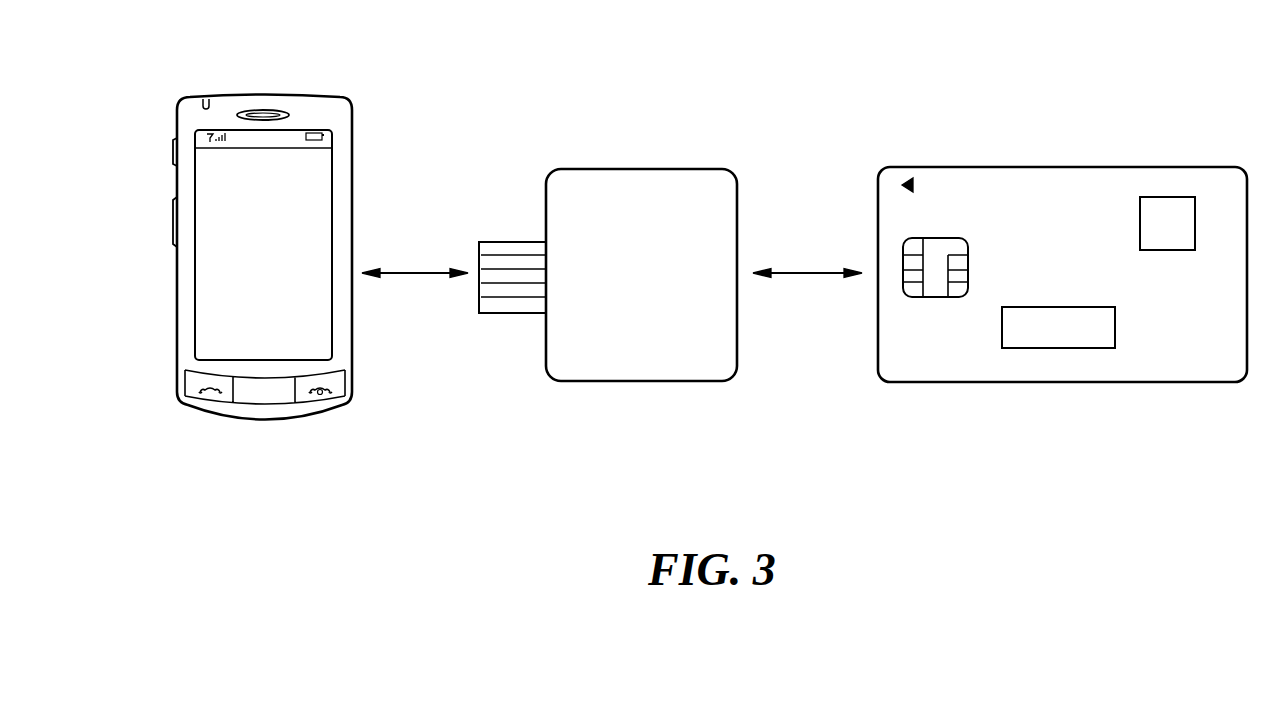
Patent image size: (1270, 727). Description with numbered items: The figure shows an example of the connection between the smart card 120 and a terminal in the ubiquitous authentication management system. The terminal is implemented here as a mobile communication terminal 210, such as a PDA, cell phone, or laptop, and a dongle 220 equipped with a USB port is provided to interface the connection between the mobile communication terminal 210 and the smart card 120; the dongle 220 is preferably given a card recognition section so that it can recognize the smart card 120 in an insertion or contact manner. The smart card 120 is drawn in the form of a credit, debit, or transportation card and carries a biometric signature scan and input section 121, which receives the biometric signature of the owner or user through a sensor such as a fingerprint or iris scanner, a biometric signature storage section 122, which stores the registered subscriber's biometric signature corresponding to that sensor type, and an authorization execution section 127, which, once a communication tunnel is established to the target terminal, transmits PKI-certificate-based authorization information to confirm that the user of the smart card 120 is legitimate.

The mobile communication terminal 210 is at (353, 180).
The dongle 220 is at (642, 167).
The smart card 120 is at (1063, 167).
The biometric signature scan and input section 121 is at (1166, 197).
The biometric signature storage section 122 is at (934, 238).
The authorization execution section 127 is at (1058, 348).